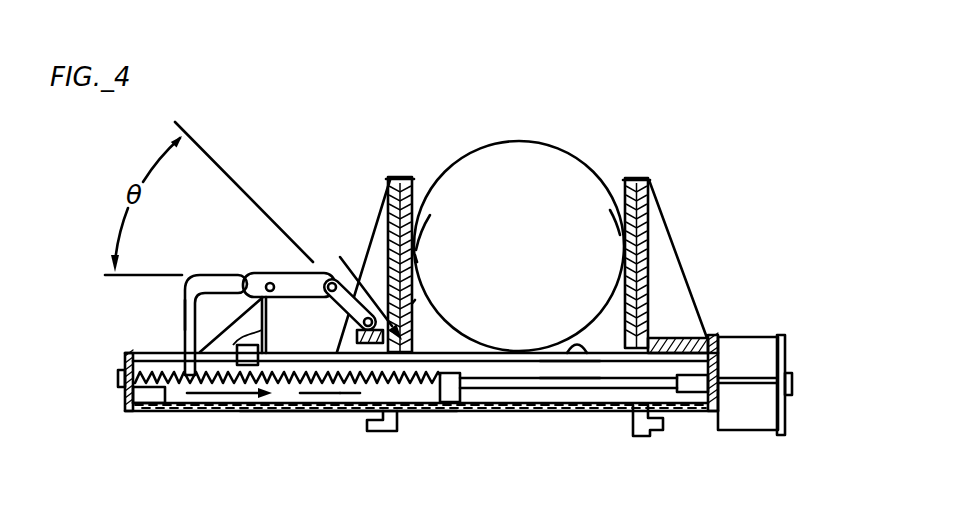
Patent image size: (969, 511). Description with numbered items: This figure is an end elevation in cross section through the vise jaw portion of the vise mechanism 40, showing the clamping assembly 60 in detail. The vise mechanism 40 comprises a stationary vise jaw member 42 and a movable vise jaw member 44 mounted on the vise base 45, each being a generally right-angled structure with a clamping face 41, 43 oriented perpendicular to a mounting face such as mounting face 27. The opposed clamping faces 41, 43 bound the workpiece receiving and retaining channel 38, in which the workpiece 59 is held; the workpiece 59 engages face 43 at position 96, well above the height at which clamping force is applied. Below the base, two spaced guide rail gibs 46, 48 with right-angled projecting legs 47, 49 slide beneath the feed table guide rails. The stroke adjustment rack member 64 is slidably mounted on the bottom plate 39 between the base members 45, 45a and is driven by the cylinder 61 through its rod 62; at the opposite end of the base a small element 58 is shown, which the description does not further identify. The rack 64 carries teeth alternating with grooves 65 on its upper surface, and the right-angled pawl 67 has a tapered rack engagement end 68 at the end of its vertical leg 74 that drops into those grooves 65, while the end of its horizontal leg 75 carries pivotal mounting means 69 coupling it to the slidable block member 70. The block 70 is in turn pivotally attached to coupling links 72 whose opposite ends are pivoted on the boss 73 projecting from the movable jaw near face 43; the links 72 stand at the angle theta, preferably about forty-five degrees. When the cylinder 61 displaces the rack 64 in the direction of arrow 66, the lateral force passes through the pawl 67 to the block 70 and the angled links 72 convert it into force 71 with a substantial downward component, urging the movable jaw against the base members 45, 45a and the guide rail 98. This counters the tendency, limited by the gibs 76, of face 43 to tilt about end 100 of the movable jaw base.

The mounting face 27 is at (703, 336).
The workpiece receiving and retaining channel 38 is at (565, 400).
The bottom plate 39 is at (240, 413).
The vise mechanism 40 is at (752, 182).
The clamping face 41 is at (642, 232).
The vise jaw member 42 is at (645, 166).
The clamping face 43 is at (399, 220).
The vise jaw member 44 is at (390, 172).
The vise base 45 is at (112, 402).
The base member 45a is at (585, 352).
The guide rail gib 46 is at (678, 452).
The projecting leg 47 is at (665, 422).
The guide rail gib 48 is at (411, 458).
The projecting leg 49 is at (378, 431).
The end wall screw 58 is at (126, 357).
The workpiece 59 is at (527, 141).
The clamping assembly 60 is at (276, 247).
The cylinder 61 is at (763, 422).
The rod 62 is at (518, 390).
The stroke adjustment rack member 64 is at (318, 393).
The grooves 65 is at (350, 393).
The arrow 66 is at (210, 404).
The pawl 67 is at (176, 286).
The rack engagement end 68 is at (170, 390).
The pivotal mounting means 69 is at (265, 266).
The slidable block member 70 is at (180, 302).
The force 71 is at (417, 262).
The coupling links 72 is at (302, 395).
The boss 73 is at (415, 300).
The vertical leg 74 is at (185, 302).
The horizontal leg 75 is at (233, 278).
The gibs 76 is at (388, 368).
The position 96 is at (416, 250).
The guide rail 98 is at (619, 355).
The end 100 is at (260, 330).